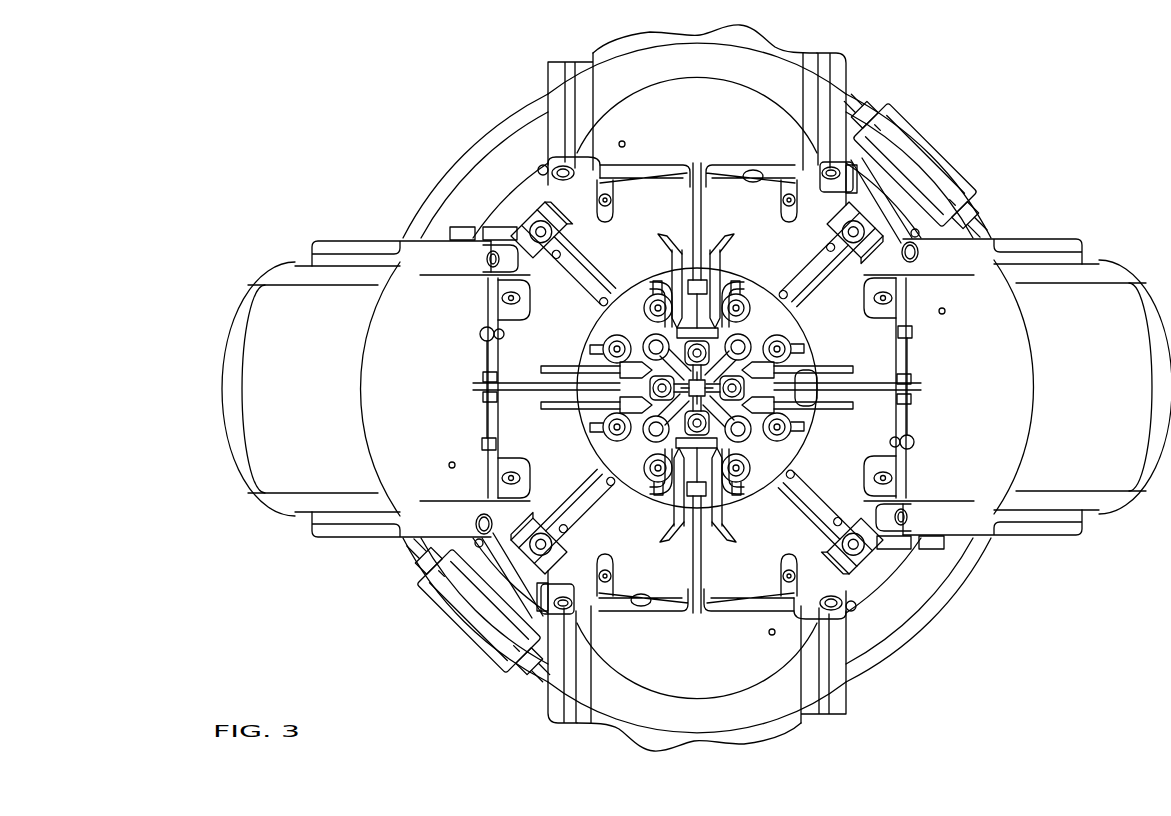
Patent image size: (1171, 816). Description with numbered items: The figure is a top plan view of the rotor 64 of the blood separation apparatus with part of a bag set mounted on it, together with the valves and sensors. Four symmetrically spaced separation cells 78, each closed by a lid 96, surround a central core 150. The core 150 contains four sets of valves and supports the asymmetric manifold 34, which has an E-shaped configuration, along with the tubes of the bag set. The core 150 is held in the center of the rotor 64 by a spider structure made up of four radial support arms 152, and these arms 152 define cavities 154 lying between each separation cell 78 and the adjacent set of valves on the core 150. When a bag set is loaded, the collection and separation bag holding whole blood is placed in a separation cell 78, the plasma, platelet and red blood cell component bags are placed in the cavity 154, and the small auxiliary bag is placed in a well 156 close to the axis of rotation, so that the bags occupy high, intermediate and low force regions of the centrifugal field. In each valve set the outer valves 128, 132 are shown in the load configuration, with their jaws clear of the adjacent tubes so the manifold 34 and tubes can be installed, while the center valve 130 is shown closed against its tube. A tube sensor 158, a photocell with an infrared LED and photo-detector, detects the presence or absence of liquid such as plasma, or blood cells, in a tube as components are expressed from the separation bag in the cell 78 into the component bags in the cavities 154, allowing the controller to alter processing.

The rotor 64 is at (326, 111).
The separation cell 78 is at (546, 80).
The lid 96 is at (710, 139).
The cavity 154 is at (749, 214).
The radial support arm 152 is at (569, 281).
The central core 150 is at (637, 273).
The tube sensor 158 is at (680, 270).
The outer valve 128 is at (781, 341).
The outer valve 132 is at (795, 432).
The asymmetric manifold 34 is at (679, 336).
The center valve 130 is at (744, 424).
The well 156 is at (647, 445).